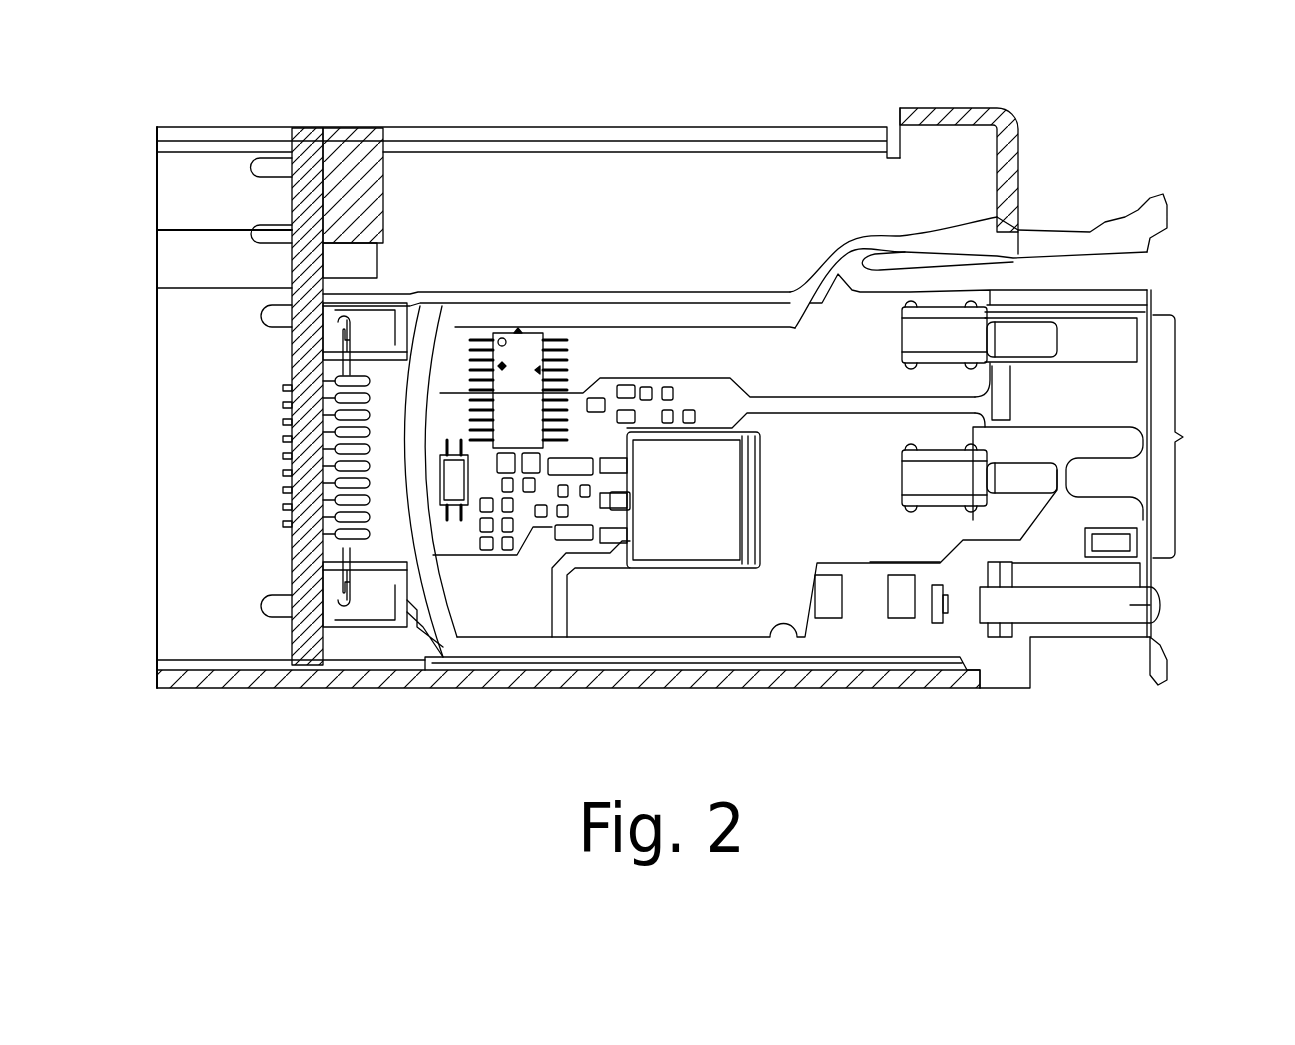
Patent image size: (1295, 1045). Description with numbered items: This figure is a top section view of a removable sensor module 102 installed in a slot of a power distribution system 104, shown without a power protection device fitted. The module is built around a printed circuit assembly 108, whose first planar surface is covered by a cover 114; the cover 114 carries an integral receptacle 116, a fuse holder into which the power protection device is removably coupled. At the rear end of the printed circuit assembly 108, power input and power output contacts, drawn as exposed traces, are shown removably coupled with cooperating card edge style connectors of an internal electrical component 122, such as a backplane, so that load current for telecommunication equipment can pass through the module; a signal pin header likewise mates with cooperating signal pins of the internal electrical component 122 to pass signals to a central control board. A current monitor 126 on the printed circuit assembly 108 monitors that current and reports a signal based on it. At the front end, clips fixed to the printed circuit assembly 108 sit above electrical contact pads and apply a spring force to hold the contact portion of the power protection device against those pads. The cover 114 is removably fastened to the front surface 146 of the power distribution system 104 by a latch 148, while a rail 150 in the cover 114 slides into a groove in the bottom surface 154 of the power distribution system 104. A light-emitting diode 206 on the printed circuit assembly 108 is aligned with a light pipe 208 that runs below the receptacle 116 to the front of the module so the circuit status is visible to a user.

The removable sensor module 102 is at (1147, 680).
The power distribution system 104 is at (157, 675).
The printed circuit assembly (PCA) 108 is at (630, 292).
The cover 114 is at (700, 322).
The receptacle 116 is at (1147, 290).
The internal electrical component 122 is at (292, 660).
The current monitor 126 is at (705, 510).
The front surface 146 is at (1017, 163).
The latch 148 is at (955, 222).
The rail 150 is at (925, 680).
The bottom surface 154 is at (953, 687).
The light-emitting diode (LED) 206 is at (932, 590).
The light pipe 208 is at (1168, 592).